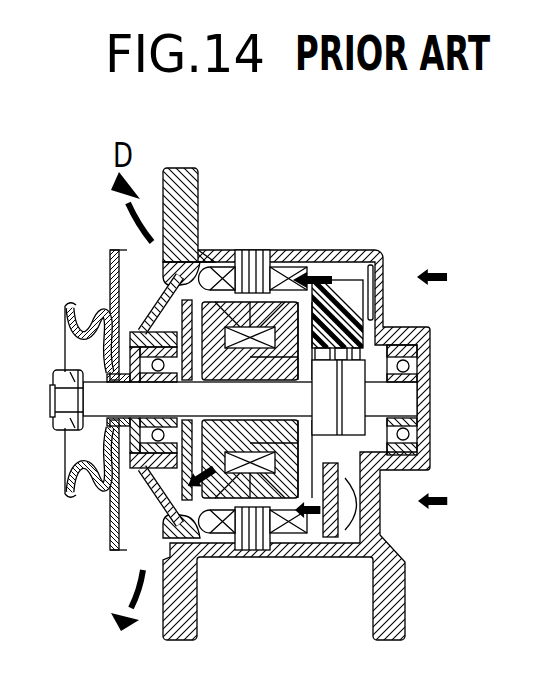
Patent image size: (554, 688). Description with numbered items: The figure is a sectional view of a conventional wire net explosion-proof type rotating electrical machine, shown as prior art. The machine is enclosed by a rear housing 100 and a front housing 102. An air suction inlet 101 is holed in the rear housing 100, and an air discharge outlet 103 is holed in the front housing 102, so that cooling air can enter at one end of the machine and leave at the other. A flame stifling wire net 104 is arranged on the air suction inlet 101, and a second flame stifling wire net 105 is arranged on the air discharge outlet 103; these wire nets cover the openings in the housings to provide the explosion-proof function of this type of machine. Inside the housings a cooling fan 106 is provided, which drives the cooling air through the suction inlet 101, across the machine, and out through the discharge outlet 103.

The rear housing 100 is at (338, 252).
The air suction inlet 101 is at (380, 295).
The front housing 102 is at (180, 213).
The air discharge outlet 103 is at (150, 273).
The flame stifling wire net 104 is at (380, 278).
The flame stifling wire net 105 is at (172, 313).
The cooling fan 106 is at (125, 265).